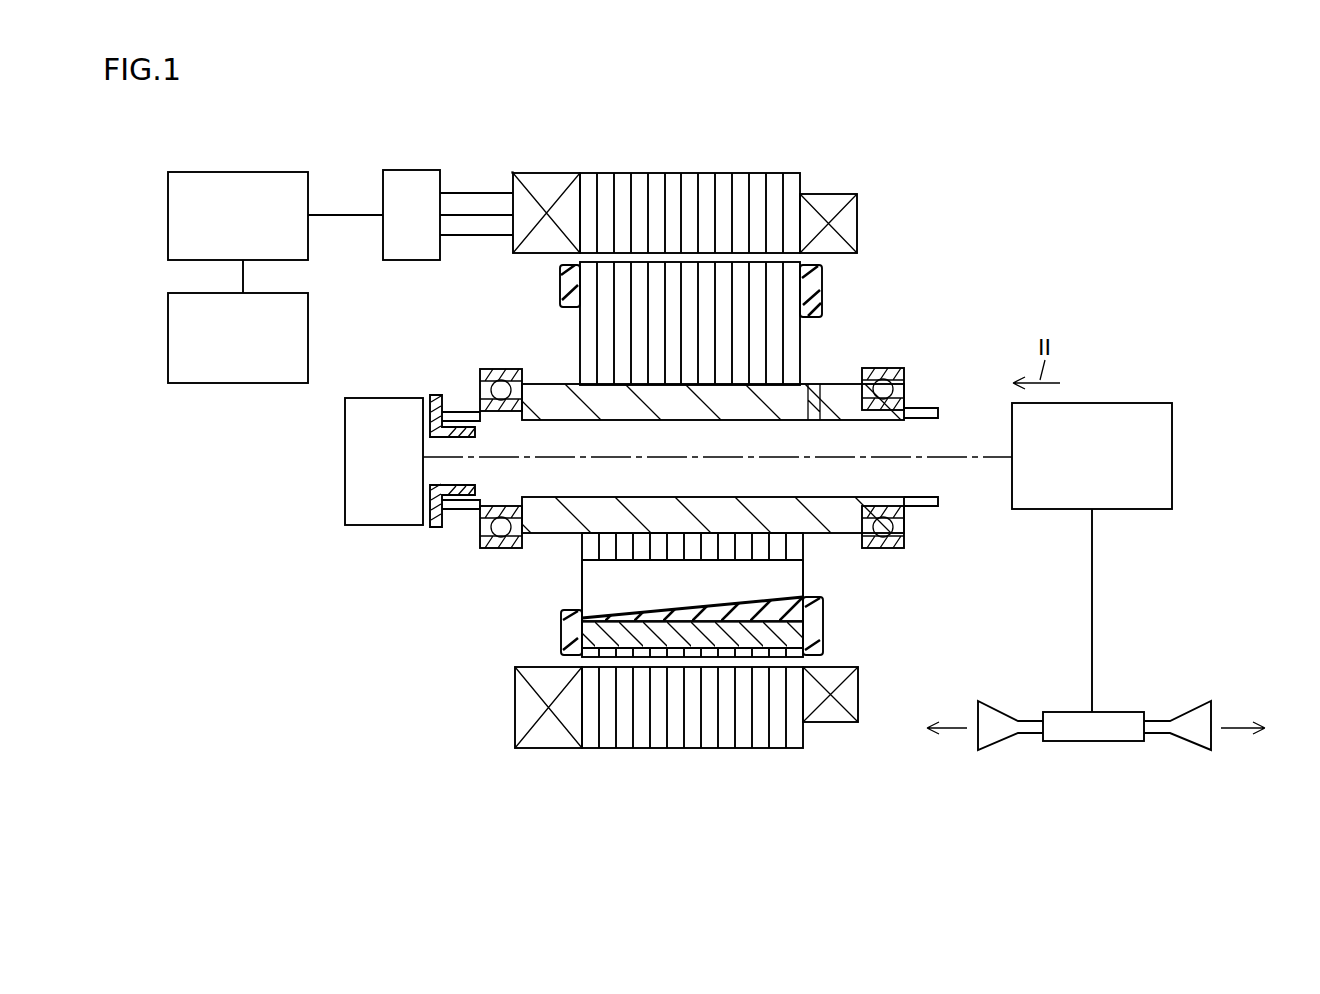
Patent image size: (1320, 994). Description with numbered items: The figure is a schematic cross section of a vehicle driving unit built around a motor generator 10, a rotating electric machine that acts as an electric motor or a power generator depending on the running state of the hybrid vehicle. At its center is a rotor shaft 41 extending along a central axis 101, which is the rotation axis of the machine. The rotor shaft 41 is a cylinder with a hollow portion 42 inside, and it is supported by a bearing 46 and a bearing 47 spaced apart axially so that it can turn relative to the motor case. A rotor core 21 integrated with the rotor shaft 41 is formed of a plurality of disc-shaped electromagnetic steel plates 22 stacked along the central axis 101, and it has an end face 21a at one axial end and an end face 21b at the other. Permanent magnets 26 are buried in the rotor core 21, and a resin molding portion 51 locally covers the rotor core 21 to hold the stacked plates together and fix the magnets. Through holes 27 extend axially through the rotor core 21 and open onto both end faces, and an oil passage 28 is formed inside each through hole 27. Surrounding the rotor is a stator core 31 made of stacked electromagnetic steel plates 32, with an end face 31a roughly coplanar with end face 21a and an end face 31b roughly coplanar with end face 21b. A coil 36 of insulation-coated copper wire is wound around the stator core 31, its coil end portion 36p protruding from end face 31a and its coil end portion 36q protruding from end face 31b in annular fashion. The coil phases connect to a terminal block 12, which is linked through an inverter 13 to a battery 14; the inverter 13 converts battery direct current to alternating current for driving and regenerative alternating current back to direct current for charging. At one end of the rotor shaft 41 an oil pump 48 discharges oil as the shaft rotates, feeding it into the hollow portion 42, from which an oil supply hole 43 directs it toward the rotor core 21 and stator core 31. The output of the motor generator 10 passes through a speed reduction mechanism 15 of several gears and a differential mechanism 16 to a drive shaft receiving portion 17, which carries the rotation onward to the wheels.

The motor generator 10 is at (823, 123).
The terminal block 12 is at (411, 170).
The inverter 13 is at (237, 171).
The battery 14 is at (168, 337).
The speed reduction mechanism 15 is at (1173, 456).
The differential mechanism 16 is at (1092, 743).
The drive shaft receiving portion 17 is at (1194, 758).
The rotor core 21 is at (638, 264).
The end face 21a is at (822, 333).
The end face 21b is at (578, 330).
The electromagnetic steel plate 22 is at (690, 277).
The permanent magnet 26 is at (690, 630).
The through hole 27 is at (777, 561).
The oil passage 28 is at (605, 592).
The stator core 31 is at (735, 173).
The end face 31a is at (802, 220).
The end face 31b is at (580, 213).
The electromagnetic steel plate 32 is at (773, 182).
The coil 36 is at (873, 228).
The coil end portion 36p is at (850, 212).
The coil end portion 36q is at (535, 188).
The rotor shaft 41 is at (560, 398).
The hollow portion 42 is at (907, 402).
The oil supply hole 43 is at (822, 390).
The bearing 46 is at (906, 543).
The bearing 47 is at (482, 539).
The oil pump 48 is at (345, 463).
The resin molding portion 51 is at (815, 608).
The central axis 101 is at (907, 455).